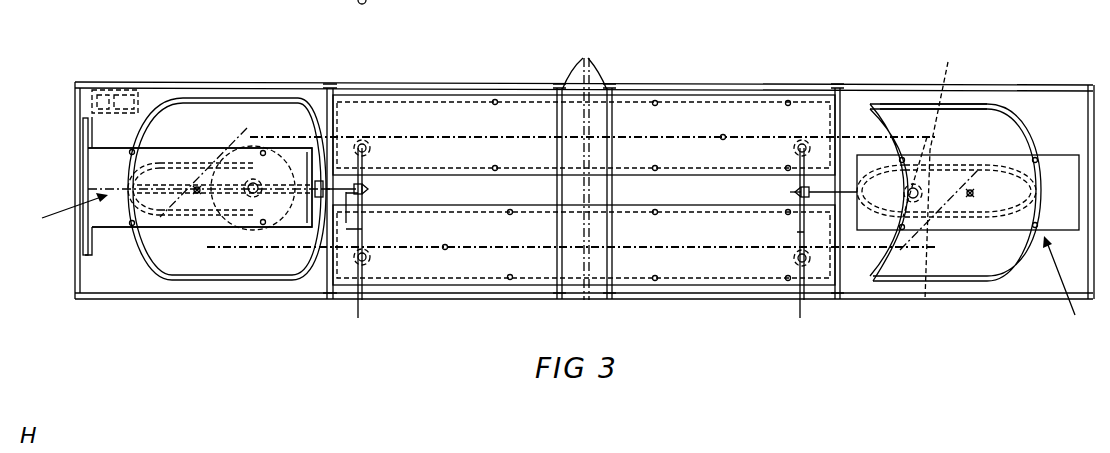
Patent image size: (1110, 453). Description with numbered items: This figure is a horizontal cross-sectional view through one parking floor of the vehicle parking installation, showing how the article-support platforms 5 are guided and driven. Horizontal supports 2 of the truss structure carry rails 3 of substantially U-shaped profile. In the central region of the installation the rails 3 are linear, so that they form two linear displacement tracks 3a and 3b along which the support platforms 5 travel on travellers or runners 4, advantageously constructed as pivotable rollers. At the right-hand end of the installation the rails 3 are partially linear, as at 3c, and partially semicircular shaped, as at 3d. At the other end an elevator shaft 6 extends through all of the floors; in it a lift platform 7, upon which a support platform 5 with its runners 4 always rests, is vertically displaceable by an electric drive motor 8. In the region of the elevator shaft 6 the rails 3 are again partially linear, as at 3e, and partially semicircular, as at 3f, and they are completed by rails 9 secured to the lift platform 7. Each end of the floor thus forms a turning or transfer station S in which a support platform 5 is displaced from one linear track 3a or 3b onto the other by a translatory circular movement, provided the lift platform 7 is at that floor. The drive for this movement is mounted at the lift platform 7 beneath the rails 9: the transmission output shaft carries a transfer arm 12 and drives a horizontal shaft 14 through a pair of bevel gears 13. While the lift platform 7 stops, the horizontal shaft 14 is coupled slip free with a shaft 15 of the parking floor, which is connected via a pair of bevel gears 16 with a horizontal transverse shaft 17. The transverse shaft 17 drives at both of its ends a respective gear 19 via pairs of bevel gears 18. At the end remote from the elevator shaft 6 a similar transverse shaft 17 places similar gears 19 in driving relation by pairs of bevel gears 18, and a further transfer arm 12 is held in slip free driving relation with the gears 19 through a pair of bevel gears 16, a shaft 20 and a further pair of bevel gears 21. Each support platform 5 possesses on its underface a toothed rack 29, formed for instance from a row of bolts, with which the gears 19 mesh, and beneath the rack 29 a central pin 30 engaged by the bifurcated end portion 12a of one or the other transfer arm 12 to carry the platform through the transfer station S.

The horizontal supports 2 is at (327, 90).
The rails 3 is at (220, 98).
The linear displacement track 3a is at (637, 169).
The linear displacement track 3b is at (637, 277).
The linear rail portion 3c is at (936, 105).
The semicircular rail portion 3d is at (1024, 124).
The linear rail portion 3e is at (247, 98).
The semicircular rail portion 3f is at (147, 112).
The travellers or runners 4 is at (378, 102).
The article-support platform 5 is at (484, 112).
The elevator shaft 6 is at (160, 228).
The lift platform 7 is at (200, 245).
The electric drive motor 8 is at (130, 90).
The rails 9 is at (140, 192).
The transfer arm 12 is at (203, 203).
The bifurcated end portion 12a is at (192, 192).
The pair of bevel gears 13 is at (258, 168).
The horizontal shaft 14 is at (325, 180).
The shaft 15 is at (346, 215).
The pair of bevel gears 16 is at (368, 190).
The horizontal transverse shaft 17 is at (362, 229).
The pairs of bevel gears 18 is at (371, 150).
The gear 19 is at (356, 152).
The shaft 20 is at (848, 195).
The pair of bevel gears 21 is at (920, 168).
The toothed rack 29 is at (523, 243).
The pin 30 is at (185, 165).
The turning or transfer station S is at (554, 266).